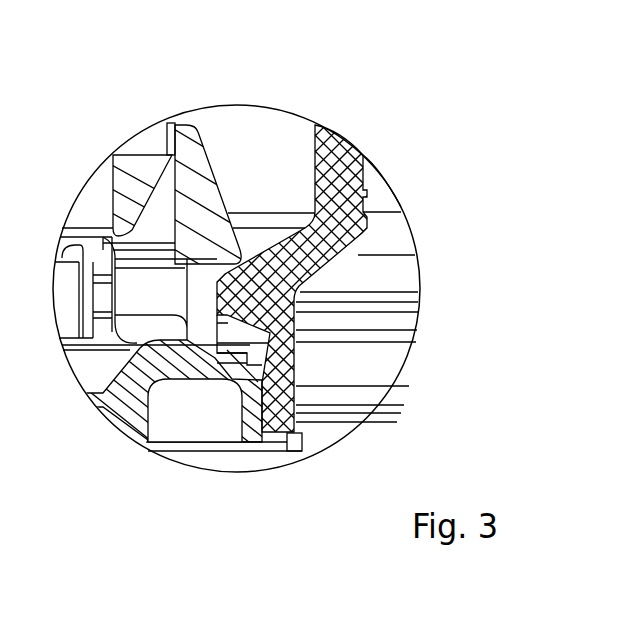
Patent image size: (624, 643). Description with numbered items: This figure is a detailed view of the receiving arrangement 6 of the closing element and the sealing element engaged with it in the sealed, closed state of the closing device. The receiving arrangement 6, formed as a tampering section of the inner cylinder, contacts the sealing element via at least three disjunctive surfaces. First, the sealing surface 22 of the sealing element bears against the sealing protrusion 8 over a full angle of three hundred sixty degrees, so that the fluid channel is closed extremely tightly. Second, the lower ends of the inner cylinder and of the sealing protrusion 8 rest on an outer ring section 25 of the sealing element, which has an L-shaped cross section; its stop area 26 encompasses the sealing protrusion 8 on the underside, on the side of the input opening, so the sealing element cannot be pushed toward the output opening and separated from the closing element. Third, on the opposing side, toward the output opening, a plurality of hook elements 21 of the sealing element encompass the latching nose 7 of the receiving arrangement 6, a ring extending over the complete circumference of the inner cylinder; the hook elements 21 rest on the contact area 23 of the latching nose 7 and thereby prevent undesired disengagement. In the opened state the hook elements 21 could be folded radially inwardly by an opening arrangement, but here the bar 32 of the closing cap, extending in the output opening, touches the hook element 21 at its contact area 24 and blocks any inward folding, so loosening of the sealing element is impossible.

The receiving arrangement 6 is at (295, 263).
The latching nose 7 is at (297, 308).
The sealing protrusion 8 is at (242, 460).
The hook elements 21 is at (192, 217).
The sealing surface 22 is at (262, 398).
The contact area 23 is at (226, 270).
The contact area 24 is at (173, 153).
The outer ring section 25 is at (240, 447).
The stop area 26 is at (284, 433).
The bar 32 is at (131, 158).